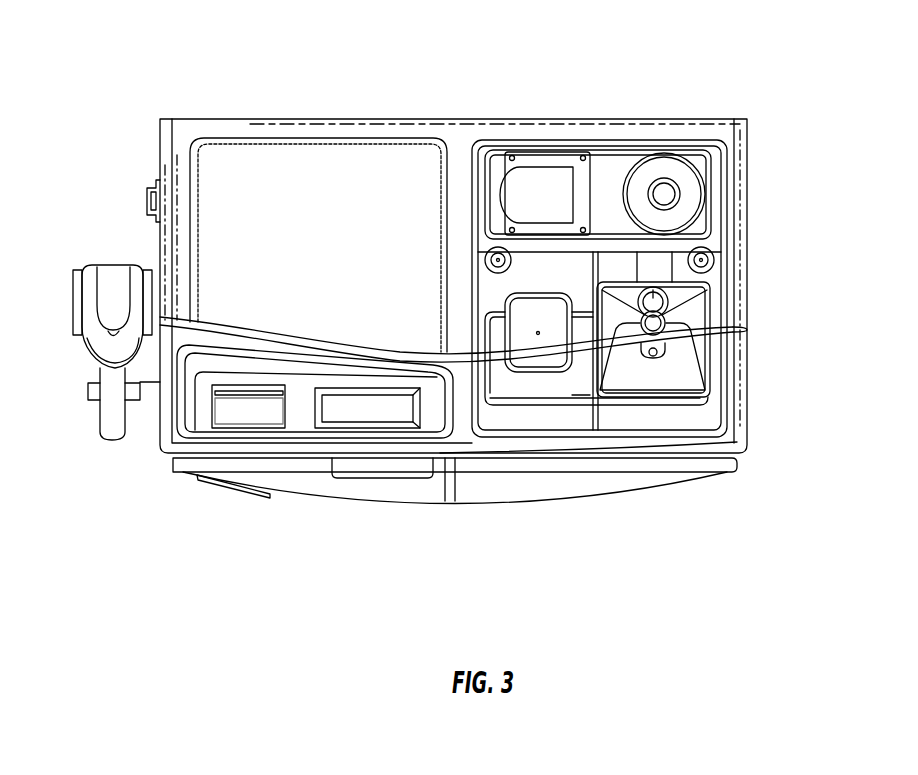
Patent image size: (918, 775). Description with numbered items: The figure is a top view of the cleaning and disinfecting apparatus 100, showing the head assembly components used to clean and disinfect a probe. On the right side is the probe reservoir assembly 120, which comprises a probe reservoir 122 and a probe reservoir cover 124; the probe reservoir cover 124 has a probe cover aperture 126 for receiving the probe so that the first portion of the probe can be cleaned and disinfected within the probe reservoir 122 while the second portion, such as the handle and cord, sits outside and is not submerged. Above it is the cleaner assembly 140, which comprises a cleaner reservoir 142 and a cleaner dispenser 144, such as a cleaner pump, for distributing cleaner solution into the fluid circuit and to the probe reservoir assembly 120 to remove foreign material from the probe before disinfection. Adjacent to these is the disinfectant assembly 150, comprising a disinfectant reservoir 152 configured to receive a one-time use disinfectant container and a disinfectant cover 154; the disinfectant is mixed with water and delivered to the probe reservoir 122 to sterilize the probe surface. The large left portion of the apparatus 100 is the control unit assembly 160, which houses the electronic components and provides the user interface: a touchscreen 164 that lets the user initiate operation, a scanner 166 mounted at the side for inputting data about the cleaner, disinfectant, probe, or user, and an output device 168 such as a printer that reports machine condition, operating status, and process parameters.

The apparatus 100 is at (318, 52).
The cleaner assembly 140 is at (538, 84).
The cleaner dispenser 144 is at (528, 158).
The cleaner reservoir 142 is at (686, 178).
The probe reservoir cover 124 is at (712, 262).
The probe cover aperture 126 is at (652, 322).
The probe reservoir assembly 120 is at (749, 326).
The probe reservoir 122 is at (684, 370).
The disinfectant assembly 150 is at (468, 297).
The disinfectant reservoir 152 is at (513, 362).
The disinfectant cover 154 is at (552, 380).
The control unit assembly 160 is at (167, 460).
The output device 168 is at (222, 418).
The touchscreen 164 is at (333, 405).
The scanner 166 is at (103, 273).